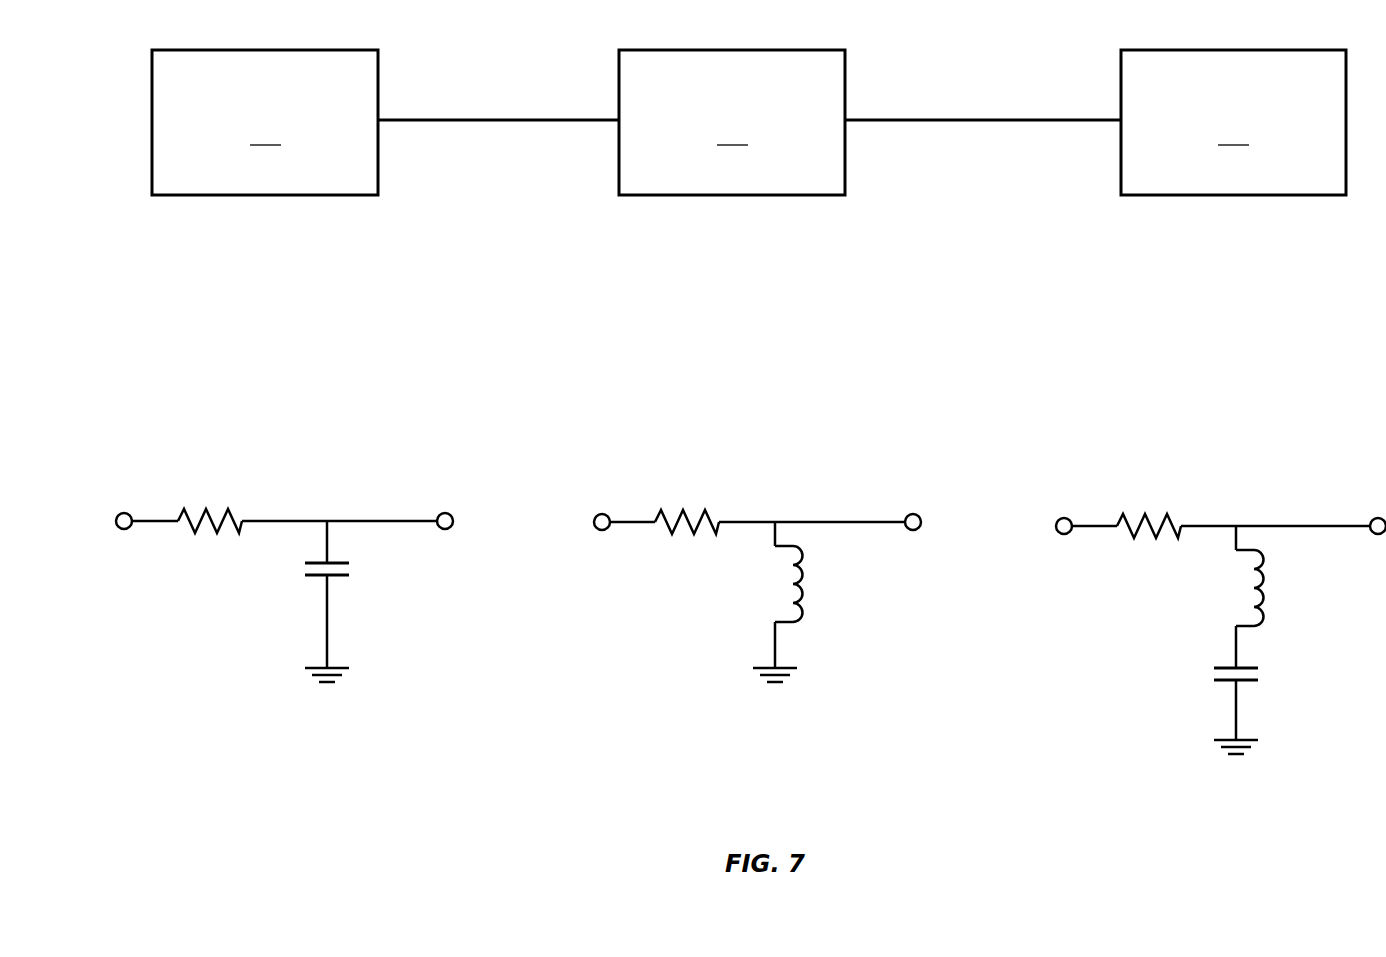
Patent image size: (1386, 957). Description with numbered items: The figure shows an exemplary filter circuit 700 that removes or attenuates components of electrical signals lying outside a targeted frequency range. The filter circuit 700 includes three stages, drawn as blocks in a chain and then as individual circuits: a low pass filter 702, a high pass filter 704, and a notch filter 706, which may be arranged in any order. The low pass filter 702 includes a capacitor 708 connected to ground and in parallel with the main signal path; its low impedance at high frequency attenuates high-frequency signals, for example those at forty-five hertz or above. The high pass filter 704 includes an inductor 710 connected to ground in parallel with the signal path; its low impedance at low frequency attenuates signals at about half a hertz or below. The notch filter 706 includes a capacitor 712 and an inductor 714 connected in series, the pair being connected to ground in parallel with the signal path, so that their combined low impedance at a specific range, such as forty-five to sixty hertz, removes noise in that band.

The filter circuit 700 is at (751, 420).
The low pass filter 702 is at (284, 419).
The high pass filter 704 is at (757, 418).
The notch filter 706 is at (1221, 420).
The capacitor 708 is at (350, 576).
The inductor 710 is at (800, 623).
The capacitor 712 is at (1258, 681).
The inductor 714 is at (1262, 627).